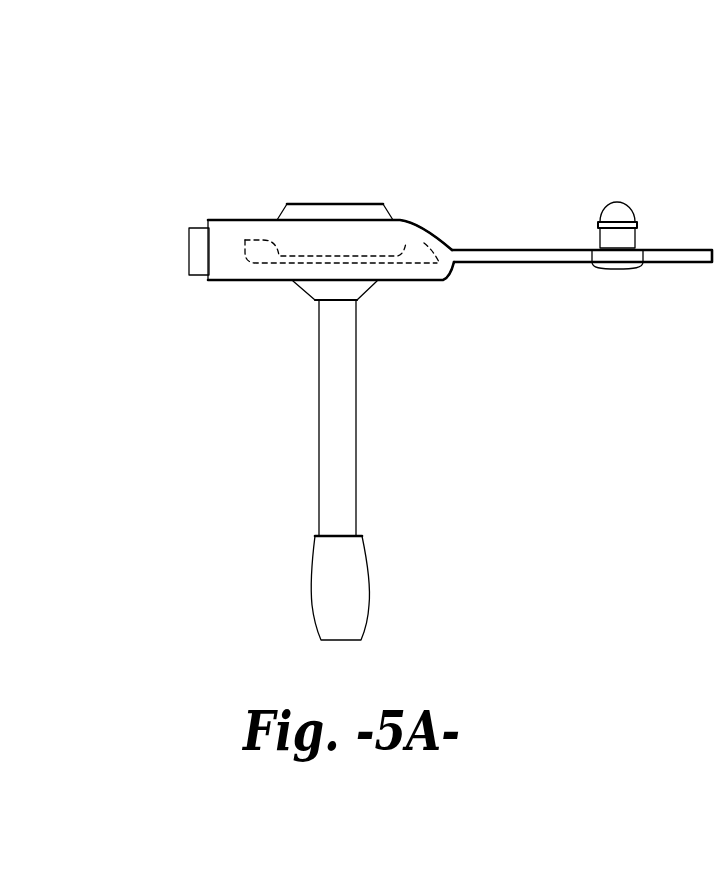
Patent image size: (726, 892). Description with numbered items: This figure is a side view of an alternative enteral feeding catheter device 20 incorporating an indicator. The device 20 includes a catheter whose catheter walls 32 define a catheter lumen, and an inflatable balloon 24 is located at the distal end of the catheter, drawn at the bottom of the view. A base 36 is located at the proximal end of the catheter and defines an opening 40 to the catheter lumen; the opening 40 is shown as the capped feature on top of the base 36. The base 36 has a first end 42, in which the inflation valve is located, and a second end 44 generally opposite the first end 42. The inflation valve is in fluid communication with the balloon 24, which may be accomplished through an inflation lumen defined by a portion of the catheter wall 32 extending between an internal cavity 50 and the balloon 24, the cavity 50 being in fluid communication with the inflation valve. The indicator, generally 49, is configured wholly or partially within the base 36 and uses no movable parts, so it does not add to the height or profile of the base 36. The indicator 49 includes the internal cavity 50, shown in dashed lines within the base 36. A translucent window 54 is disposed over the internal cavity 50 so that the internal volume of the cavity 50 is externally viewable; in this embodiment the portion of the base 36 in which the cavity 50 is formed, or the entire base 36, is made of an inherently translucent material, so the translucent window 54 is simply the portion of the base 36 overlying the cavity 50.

The enteral feeding catheter device 20 is at (463, 149).
The inflatable balloon 24 is at (335, 585).
The catheter walls 32 is at (337, 415).
The base 36 is at (238, 272).
The opening 40 is at (330, 204).
The first end 42 is at (194, 224).
The second end 44 is at (444, 278).
The indicator 49 is at (488, 221).
The internal cavity 50 is at (413, 255).
The translucent window 54 is at (441, 238).